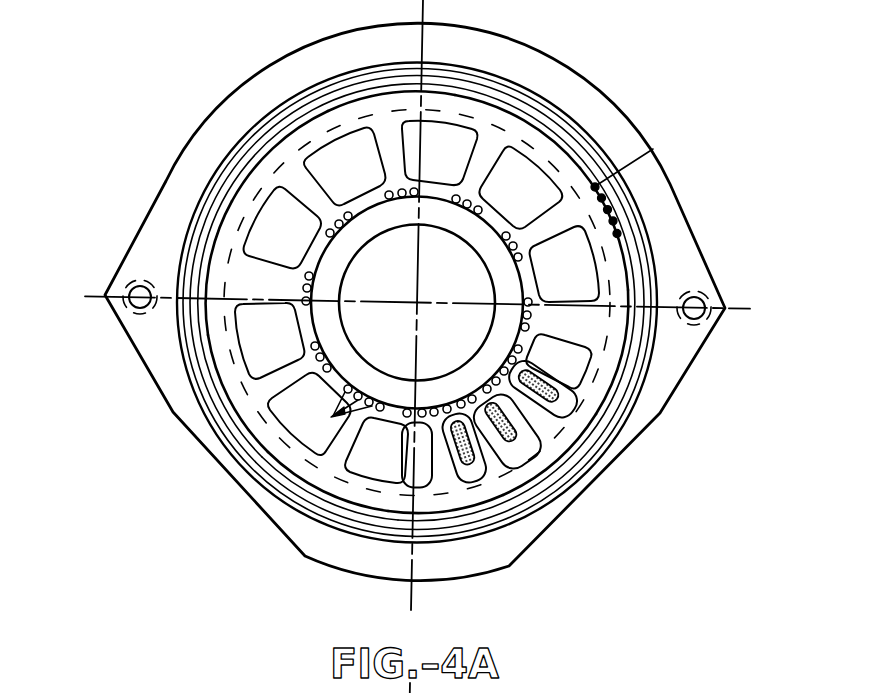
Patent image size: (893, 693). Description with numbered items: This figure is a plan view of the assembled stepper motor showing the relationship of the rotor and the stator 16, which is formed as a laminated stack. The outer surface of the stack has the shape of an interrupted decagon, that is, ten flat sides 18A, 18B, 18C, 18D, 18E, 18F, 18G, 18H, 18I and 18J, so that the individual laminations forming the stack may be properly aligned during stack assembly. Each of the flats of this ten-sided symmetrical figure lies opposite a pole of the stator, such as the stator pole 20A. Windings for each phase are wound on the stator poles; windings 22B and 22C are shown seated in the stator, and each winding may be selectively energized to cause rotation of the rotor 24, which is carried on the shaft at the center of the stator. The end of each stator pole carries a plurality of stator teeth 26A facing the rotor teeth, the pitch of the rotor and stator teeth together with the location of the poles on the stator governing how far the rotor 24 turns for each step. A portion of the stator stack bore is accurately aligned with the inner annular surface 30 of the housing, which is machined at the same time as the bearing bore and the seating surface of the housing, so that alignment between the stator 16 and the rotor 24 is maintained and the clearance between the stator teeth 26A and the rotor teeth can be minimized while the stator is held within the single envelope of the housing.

The stator 16 is at (577, 500).
The flat side 18A is at (312, 509).
The flat side 18B is at (457, 510).
The flat side 18C is at (542, 469).
The flat side 18D is at (620, 343).
The flat side 18E is at (617, 236).
The flat side 18F is at (520, 117).
The flat side 18G is at (387, 96).
The flat side 18H is at (277, 147).
The flat side 18I is at (207, 268).
The flat side 18J is at (230, 397).
The stator pole 20A is at (330, 495).
The winding 22B is at (497, 470).
The winding 22C is at (555, 402).
The rotor 24 is at (500, 350).
The stator teeth 26A is at (333, 416).
The inner annular surface 30 is at (367, 492).